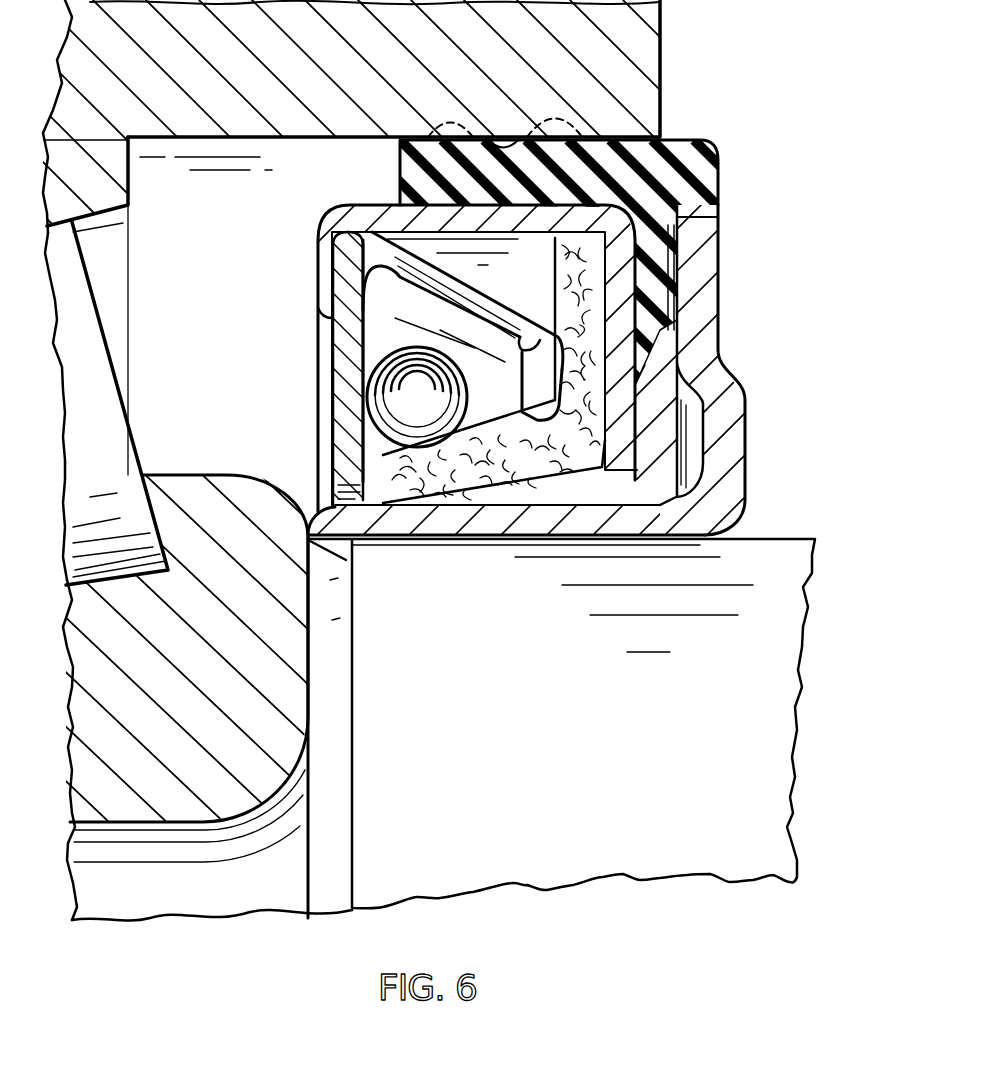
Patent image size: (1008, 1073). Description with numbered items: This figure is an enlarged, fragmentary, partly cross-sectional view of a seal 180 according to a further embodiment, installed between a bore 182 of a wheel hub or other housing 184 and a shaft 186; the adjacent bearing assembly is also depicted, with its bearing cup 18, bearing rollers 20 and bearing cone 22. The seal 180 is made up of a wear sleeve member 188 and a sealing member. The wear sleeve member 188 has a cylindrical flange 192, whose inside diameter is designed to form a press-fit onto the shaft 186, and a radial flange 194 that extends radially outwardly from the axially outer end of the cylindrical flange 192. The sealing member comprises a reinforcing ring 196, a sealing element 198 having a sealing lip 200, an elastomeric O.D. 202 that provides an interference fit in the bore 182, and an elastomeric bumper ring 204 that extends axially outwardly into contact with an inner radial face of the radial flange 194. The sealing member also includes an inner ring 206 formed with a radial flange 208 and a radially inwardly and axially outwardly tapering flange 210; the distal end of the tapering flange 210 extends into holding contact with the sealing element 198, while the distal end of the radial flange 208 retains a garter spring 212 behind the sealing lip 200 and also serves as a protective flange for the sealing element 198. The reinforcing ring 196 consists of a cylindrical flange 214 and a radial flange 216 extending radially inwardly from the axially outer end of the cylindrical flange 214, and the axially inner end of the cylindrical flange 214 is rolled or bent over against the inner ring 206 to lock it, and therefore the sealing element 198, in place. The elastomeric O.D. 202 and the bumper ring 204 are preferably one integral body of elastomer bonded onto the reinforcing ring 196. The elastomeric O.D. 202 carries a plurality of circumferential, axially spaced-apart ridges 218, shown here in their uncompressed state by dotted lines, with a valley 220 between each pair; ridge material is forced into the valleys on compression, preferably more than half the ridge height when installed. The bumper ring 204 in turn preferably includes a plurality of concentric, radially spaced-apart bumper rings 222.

The bearing cup 18 is at (116, 182).
The bearing rollers 20 is at (98, 352).
The bearing cone 22 is at (188, 480).
The seal 180 is at (539, 331).
The bore 182 is at (328, 137).
The housing 184 is at (650, 52).
The shaft 186 is at (497, 700).
The wear sleeve member 188 is at (775, 452).
The cylindrical flange 192 is at (447, 532).
The radial flange 194 is at (715, 352).
The reinforcing ring 196 is at (480, 242).
The sealing element 198 is at (520, 378).
The sealing lip 200 is at (337, 515).
The elastomeric O.D. 202 is at (667, 133).
The elastomeric bumper ring 204 is at (683, 233).
The inner ring 206 is at (405, 287).
The radial flange 208 is at (345, 400).
The tapering flange 210 is at (488, 295).
The garter spring 212 is at (375, 392).
The cylindrical flange 214 is at (440, 218).
The radial flange 216 is at (700, 317).
The ridges 218 is at (560, 120).
The valley 220 is at (493, 128).
The bumper rings 222 is at (686, 281).